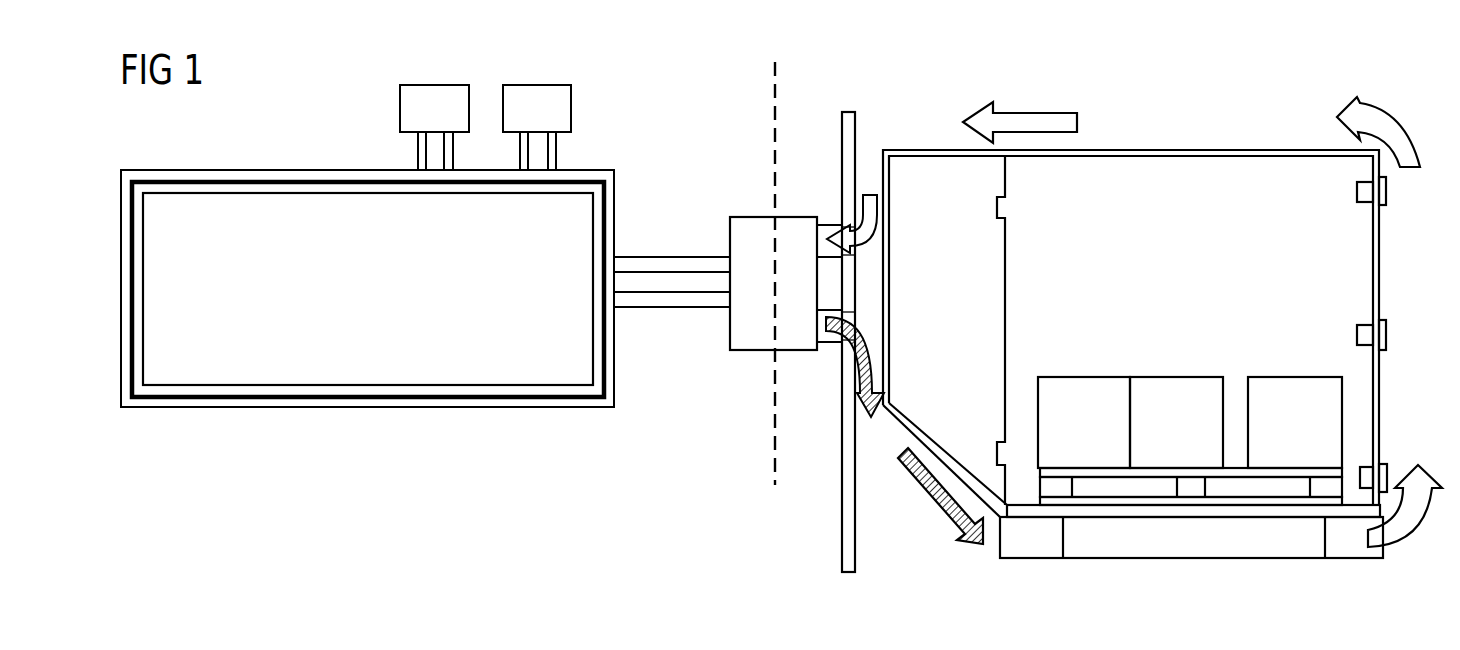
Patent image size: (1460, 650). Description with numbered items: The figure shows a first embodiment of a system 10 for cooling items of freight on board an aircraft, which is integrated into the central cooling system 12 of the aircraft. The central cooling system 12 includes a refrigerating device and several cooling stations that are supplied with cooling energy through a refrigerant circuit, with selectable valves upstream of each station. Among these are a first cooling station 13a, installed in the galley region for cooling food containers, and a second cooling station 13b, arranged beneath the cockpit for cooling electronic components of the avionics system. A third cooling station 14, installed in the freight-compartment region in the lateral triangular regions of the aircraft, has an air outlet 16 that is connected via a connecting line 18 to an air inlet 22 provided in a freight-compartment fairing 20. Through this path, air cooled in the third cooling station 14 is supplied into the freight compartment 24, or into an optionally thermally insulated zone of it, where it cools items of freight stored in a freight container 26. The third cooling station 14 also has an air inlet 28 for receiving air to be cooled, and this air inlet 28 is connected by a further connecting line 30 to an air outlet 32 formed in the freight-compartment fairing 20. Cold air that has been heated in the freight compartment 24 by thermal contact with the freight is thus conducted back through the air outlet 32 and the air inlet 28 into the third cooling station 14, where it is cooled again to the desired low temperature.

The system for cooling items of freight 10 is at (666, 133).
The central cooling system 12 is at (329, 143).
The first cooling station 13a is at (434, 127).
The second cooling station 13b is at (537, 127).
The third cooling station 14 is at (745, 225).
The air outlet 16 is at (818, 347).
The connecting line 18 is at (838, 342).
The freight-compartment fairing 20 is at (848, 556).
The air inlet 22 is at (850, 316).
The freight compartment 24 is at (1213, 111).
The freight container 26 is at (1378, 242).
The air inlet 28 is at (820, 226).
The further connecting line 30 is at (830, 226).
The air outlet 32 is at (855, 250).